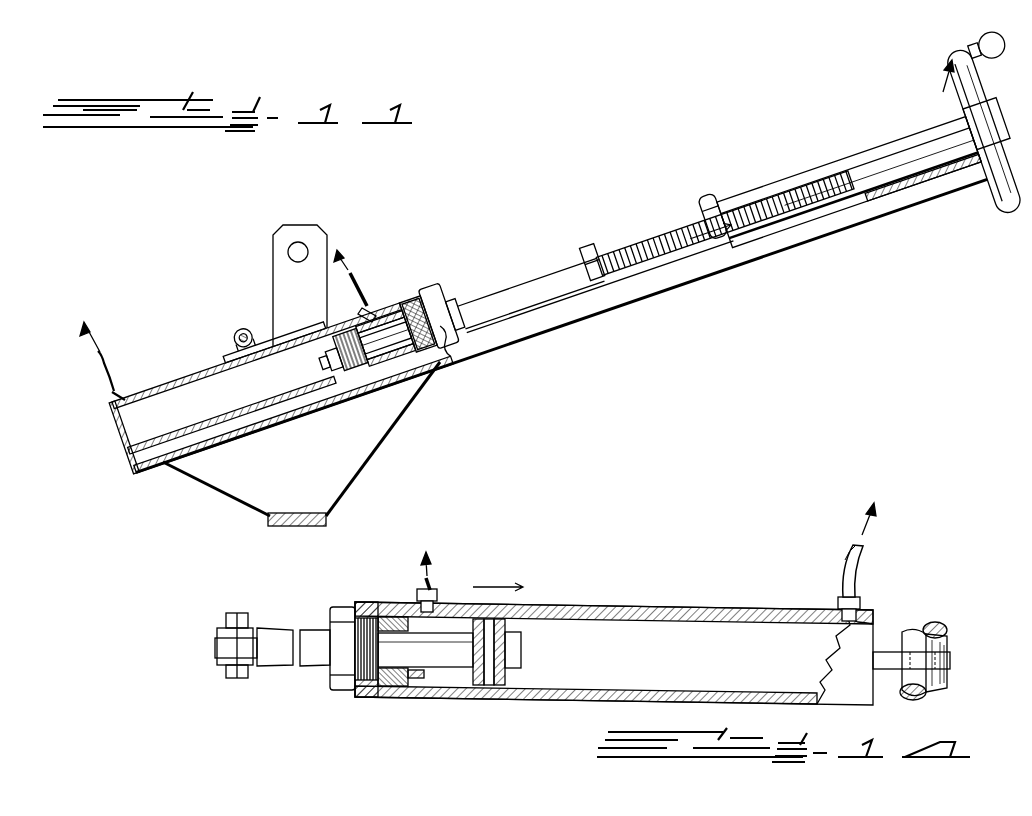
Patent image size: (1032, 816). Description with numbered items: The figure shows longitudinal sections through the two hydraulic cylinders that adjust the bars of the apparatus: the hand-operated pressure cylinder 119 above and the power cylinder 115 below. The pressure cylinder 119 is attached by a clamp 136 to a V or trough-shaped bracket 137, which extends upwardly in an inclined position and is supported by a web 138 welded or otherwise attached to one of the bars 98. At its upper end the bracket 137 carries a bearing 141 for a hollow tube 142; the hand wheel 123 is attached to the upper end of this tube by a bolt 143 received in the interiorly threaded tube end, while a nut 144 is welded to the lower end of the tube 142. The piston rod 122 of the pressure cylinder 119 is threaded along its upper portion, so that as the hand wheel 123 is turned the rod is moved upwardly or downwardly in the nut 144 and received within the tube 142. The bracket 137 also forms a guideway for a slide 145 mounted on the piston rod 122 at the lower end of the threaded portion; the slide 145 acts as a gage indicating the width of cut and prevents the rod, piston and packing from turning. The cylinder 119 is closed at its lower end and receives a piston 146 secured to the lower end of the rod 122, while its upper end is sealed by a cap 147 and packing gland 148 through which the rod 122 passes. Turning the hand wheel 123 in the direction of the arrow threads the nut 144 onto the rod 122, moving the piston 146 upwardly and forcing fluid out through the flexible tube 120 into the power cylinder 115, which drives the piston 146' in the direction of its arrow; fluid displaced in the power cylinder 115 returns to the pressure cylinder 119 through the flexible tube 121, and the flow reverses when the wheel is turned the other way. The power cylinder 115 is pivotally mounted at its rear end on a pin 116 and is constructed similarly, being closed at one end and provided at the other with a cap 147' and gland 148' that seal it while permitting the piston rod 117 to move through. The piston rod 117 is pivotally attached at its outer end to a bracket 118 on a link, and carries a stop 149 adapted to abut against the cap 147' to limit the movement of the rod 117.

In FIG. 11, the bar 98 is at (271, 259).
In FIG. 12, the power cylinder 115 is at (670, 606).
In FIG. 12, the pin 116 is at (943, 633).
In FIG. 12, the piston rod 117 is at (298, 608).
In FIG. 12, the bracket 118 is at (220, 630).
In FIG. 11, the pressure cylinder 119 is at (247, 412).
In FIG. 11, the flexible tube 120 is at (340, 280).
In FIG. 12, the flexible tube 120 is at (429, 580).
In FIG. 11, the flexible tube 121 is at (116, 388).
In FIG. 12, the flexible tube 121 is at (865, 546).
In FIG. 11, the piston rod 122 is at (579, 238).
In FIG. 11, the hand wheel 123 is at (970, 100).
In FIG. 11, the clamp 136 is at (228, 357).
In FIG. 11, the bracket 137 is at (505, 345).
In FIG. 11, the web 138 is at (375, 448).
In FIG. 11, the bearing 141 is at (960, 120).
In FIG. 11, the hollow tube 142 is at (894, 162).
In FIG. 11, the bolt 143 is at (1005, 116).
In FIG. 11, the nut 144 is at (710, 204).
In FIG. 11, the slide 145 is at (608, 226).
In FIG. 11, the piston 146 is at (343, 349).
In FIG. 11, the cap 147 is at (428, 301).
In FIG. 11, the packing gland 148 is at (451, 310).
In FIG. 12, the piston 146' is at (531, 653).
In FIG. 12, the cap 147' is at (382, 666).
In FIG. 12, the gland 148' is at (308, 654).
In FIG. 12, the stop 149 is at (438, 670).